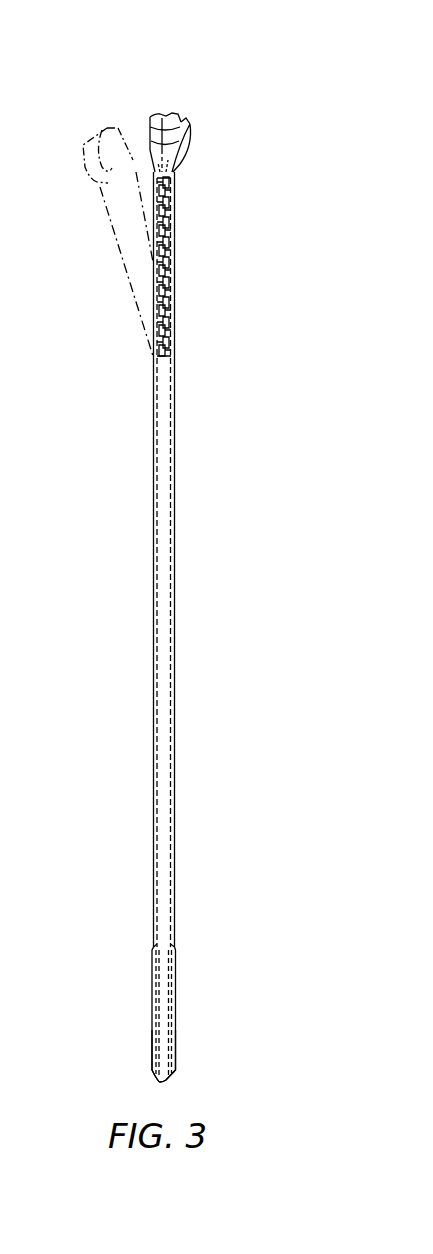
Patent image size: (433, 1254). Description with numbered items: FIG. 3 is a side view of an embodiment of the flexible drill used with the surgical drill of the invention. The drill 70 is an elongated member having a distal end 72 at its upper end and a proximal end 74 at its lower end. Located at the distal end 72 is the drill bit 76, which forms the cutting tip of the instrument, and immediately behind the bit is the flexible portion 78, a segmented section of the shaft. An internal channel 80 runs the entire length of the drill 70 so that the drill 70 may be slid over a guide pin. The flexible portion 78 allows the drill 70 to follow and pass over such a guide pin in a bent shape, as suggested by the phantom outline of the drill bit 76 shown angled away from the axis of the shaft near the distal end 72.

The drill 70 is at (134, 766).
The distal end 72 is at (134, 106).
The proximal end 74 is at (210, 1068).
The drill bit 76 is at (170, 162).
The flexible portion 78 is at (163, 290).
The internal channel 80 is at (164, 530).